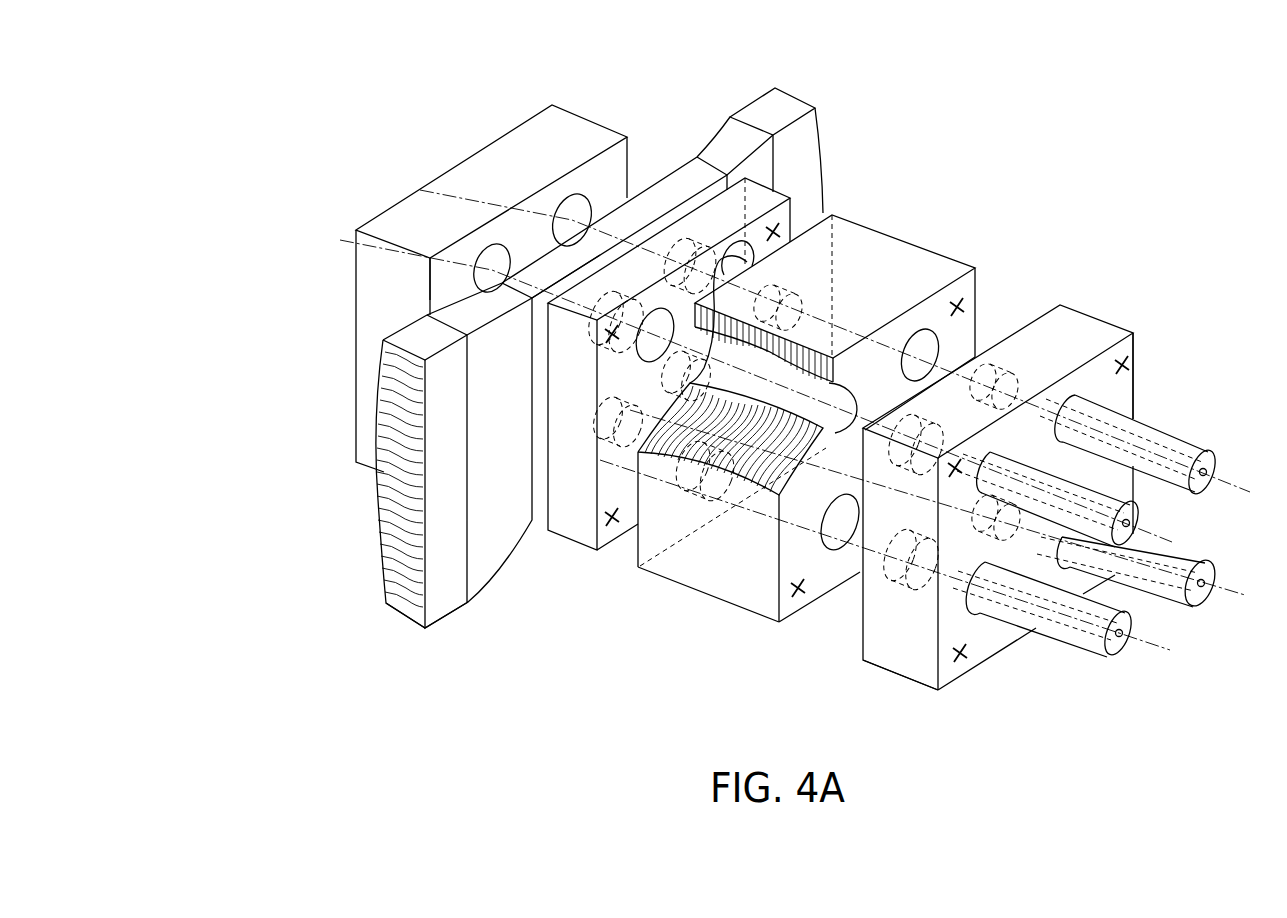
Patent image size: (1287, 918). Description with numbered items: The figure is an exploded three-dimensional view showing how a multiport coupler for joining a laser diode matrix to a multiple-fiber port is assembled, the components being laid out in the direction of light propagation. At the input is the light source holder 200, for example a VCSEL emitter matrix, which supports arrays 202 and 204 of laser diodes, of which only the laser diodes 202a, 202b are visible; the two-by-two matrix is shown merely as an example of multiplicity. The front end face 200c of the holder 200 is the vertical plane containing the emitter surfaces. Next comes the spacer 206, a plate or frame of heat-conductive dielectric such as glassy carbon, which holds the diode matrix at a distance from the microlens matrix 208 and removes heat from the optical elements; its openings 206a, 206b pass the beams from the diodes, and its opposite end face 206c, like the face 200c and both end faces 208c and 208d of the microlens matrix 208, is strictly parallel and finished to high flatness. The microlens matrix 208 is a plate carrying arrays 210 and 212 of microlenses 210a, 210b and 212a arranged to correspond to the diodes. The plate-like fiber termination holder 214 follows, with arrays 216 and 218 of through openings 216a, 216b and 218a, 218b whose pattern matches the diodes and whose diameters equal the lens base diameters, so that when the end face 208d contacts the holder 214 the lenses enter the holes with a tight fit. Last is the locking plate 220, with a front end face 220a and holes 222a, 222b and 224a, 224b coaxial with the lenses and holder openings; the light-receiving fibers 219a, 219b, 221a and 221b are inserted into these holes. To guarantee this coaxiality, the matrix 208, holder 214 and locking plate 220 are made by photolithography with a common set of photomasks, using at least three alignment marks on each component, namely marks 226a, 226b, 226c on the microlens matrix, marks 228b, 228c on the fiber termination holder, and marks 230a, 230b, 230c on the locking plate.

The light source holder 200 is at (528, 246).
The front end face 200c is at (433, 270).
The array of light sources 202 is at (622, 360).
The laser diode 202a is at (470, 215).
The laser diode 202b is at (650, 155).
The array of light sources 204 is at (591, 348).
The spacer 206 is at (796, 187).
The opening 206a is at (488, 243).
The opening 206b is at (590, 200).
The opposite end face 206c is at (423, 628).
The microlens matrix 208 is at (752, 197).
The end face 208c is at (800, 143).
The end face 208d is at (607, 527).
The array of microlenses 210 is at (642, 393).
The microlens 210a is at (383, 470).
The microlens 210b is at (782, 225).
The array of microlenses 212 is at (630, 432).
The microlens 212a is at (540, 525).
The fiber termination holder 214 is at (886, 399).
The array of through openings 216 is at (870, 470).
The through opening 216a is at (637, 565).
The through opening 216b is at (963, 324).
The array of through openings 218 is at (721, 611).
The through opening 218a is at (815, 560).
The through opening 218b is at (858, 572).
The light-receiving fiber 219a is at (1125, 548).
The light-receiving fiber 219b is at (1188, 443).
The locking plate 220 is at (1062, 495).
The front end face 220a is at (1047, 306).
The light-receiving fiber 221a is at (1118, 660).
The light-receiving fiber 221b is at (1215, 580).
The hole 222a is at (933, 677).
The hole 222b is at (1123, 397).
The hole 224a is at (985, 615).
The hole 224b is at (1065, 570).
The alignment mark 226a is at (545, 312).
The alignment mark 226b is at (745, 245).
The alignment mark 226c is at (565, 510).
The alignment mark 228b is at (800, 590).
The alignment mark 228c is at (958, 302).
The alignment mark 230a is at (950, 475).
The alignment mark 230b is at (960, 660).
The alignment mark 230c is at (1123, 362).